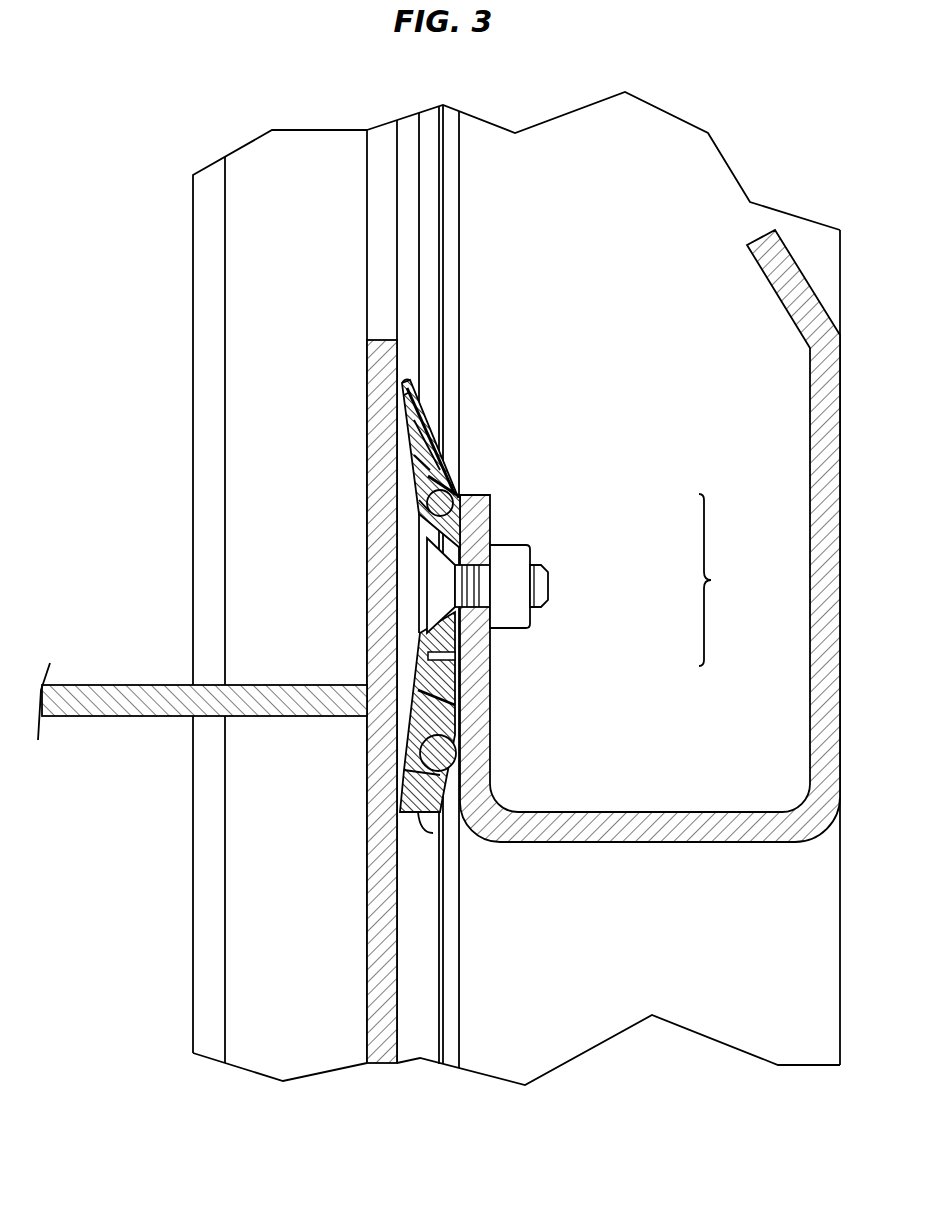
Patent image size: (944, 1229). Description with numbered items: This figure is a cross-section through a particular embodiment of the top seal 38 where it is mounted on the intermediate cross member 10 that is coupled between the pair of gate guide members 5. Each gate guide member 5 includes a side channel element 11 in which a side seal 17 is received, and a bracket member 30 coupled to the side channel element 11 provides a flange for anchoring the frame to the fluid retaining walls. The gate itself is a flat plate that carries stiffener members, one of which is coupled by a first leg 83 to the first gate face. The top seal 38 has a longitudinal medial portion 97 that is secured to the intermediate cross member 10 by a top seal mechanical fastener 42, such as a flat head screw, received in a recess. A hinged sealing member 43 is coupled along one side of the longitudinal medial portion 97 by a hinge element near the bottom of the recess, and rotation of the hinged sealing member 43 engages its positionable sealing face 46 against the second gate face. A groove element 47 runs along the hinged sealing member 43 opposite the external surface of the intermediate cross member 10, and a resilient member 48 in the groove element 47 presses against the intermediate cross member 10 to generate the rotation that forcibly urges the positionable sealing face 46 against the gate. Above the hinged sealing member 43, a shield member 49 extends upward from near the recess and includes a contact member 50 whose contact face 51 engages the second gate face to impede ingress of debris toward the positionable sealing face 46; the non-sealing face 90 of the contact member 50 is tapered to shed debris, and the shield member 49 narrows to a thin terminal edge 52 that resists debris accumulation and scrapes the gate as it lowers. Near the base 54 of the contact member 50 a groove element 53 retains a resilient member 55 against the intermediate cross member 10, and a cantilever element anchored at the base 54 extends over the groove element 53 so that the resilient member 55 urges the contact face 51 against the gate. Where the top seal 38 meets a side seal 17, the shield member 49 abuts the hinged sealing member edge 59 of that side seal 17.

The gate guide member 5 is at (605, 160).
The intermediate cross member 10 is at (704, 860).
The side channel element 11 is at (193, 275).
The side seal 17 is at (300, 298).
The bracket member 30 is at (662, 394).
The first leg 83 is at (118, 685).
The top seal mechanical fastener 42 is at (548, 590).
The longitudinal medial portion 97 is at (720, 580).
The terminal edge 52 is at (405, 380).
The non-sealing face 90 is at (418, 392).
The contact face 51 is at (423, 430).
The shield member 49 is at (438, 438).
The contact member 50 is at (432, 467).
The base of the contact member 54 is at (420, 483).
The groove element 53 is at (420, 511).
The resilient member 55 is at (445, 507).
The positionable sealing face 46 is at (432, 683).
The hinged sealing member 43 is at (445, 700).
The resilient member 48 is at (445, 752).
The groove element 47 is at (405, 771).
The top seal 38 is at (405, 828).
The hinged sealing member edge 59 is at (432, 833).